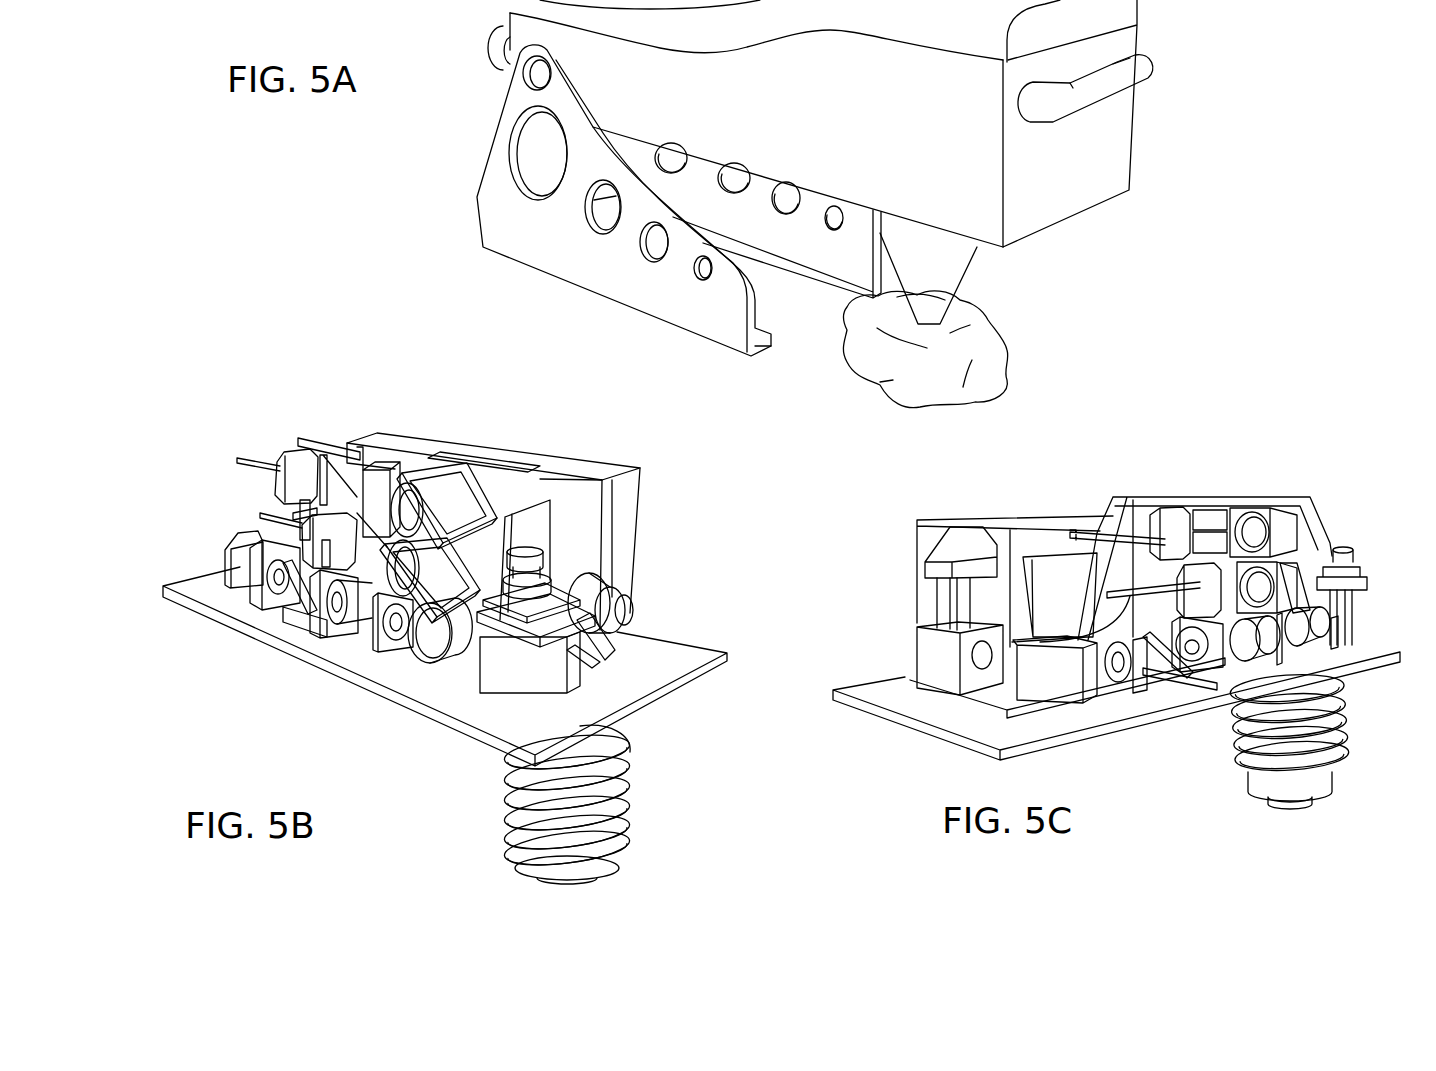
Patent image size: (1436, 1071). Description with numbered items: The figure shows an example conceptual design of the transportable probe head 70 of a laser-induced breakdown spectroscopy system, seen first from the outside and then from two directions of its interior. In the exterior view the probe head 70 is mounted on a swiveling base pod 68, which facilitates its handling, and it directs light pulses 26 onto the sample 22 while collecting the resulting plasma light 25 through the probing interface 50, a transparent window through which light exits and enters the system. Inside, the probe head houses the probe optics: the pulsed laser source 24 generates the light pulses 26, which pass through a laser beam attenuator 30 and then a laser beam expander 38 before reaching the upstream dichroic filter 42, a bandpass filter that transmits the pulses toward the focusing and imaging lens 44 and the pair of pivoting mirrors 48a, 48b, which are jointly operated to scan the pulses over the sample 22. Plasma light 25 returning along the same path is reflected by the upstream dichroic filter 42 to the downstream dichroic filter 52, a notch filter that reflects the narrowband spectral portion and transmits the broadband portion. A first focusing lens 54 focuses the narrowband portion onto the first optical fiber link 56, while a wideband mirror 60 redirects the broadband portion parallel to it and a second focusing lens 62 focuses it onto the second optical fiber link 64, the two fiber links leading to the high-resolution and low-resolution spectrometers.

In FIG. 5A, the swiveling base pod 68 is at (455, 210).
In FIG. 5A, the probe head 70 is at (1150, 79).
In FIG. 5A, the light pulses 26 is at (1003, 278).
In FIG. 5A, the plasma light 25 is at (995, 279).
In FIG. 5A, the sample 22 is at (1035, 360).
In FIG. 5B, the second optical fiber link 64 is at (253, 457).
In FIG. 5C, the second optical fiber link 64 is at (1083, 533).
In FIG. 5B, the first focusing lens 54 is at (357, 500).
In FIG. 5C, the first focusing lens 54 is at (1247, 583).
In FIG. 5B, the second focusing lens 62 is at (377, 470).
In FIG. 5C, the second focusing lens 62 is at (1253, 512).
In FIG. 5B, the wideband mirror 60 is at (450, 500).
In FIG. 5C, the wideband mirror 60 is at (1320, 523).
In FIG. 5B, the pulsed laser source 24 is at (493, 477).
In FIG. 5B, the first optical fiber link 56 is at (262, 514).
In FIG. 5C, the first optical fiber link 56 is at (1137, 599).
In FIG. 5B, the laser beam attenuator 30 is at (277, 605).
In FIG. 5B, the laser beam expander 38 is at (360, 613).
In FIG. 5B, the downstream dichroic filter 52 is at (400, 632).
In FIG. 5C, the downstream dichroic filter 52 is at (1353, 555).
In FIG. 5B, the upstream dichroic filter 42 is at (420, 645).
In FIG. 5B, the focusing and imaging lens 44 is at (490, 650).
In FIG. 5B, the pivoting mirror 48b is at (503, 677).
In FIG. 5B, the pivoting mirror 48a is at (667, 672).
In FIG. 5B, the probing interface 50 is at (627, 752).